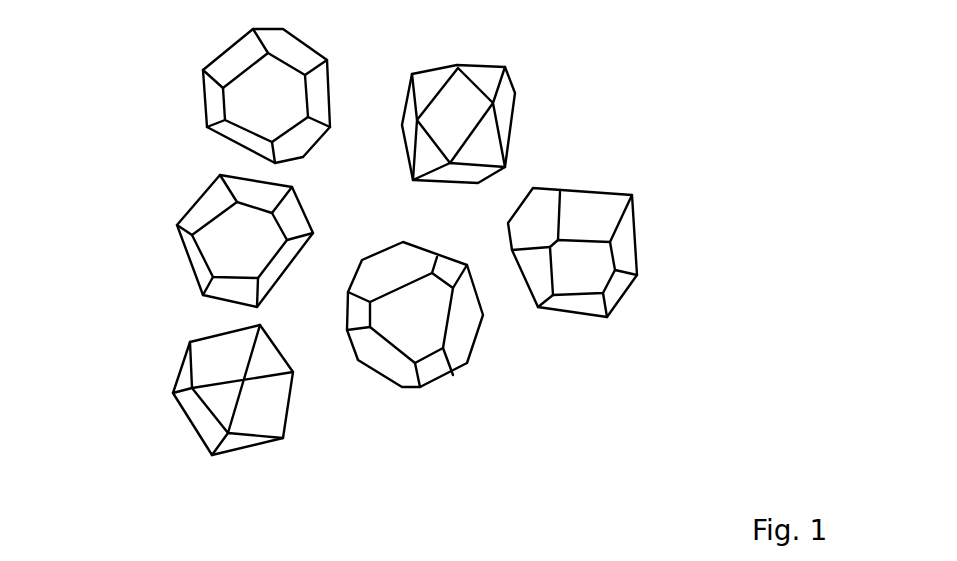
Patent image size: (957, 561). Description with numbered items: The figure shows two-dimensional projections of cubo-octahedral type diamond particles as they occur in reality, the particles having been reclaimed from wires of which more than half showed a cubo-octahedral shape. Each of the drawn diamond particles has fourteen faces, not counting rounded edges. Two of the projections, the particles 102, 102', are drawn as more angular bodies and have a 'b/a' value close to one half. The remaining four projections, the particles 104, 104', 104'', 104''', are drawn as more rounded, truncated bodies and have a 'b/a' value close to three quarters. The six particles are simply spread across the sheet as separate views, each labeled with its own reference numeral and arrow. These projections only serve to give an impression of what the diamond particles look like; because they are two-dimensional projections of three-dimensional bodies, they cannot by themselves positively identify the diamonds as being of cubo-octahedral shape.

The cubo-octahedral diamond particle 102 is at (164, 390).
The cubo-octahedral diamond particle 102' is at (534, 124).
The cubo-octahedral diamond particle 104 is at (478, 315).
The cubo-octahedral diamond particle 104' is at (194, 96).
The cubo-octahedral diamond particle 104'' is at (165, 241).
The cubo-octahedral diamond particle 104''' is at (658, 252).